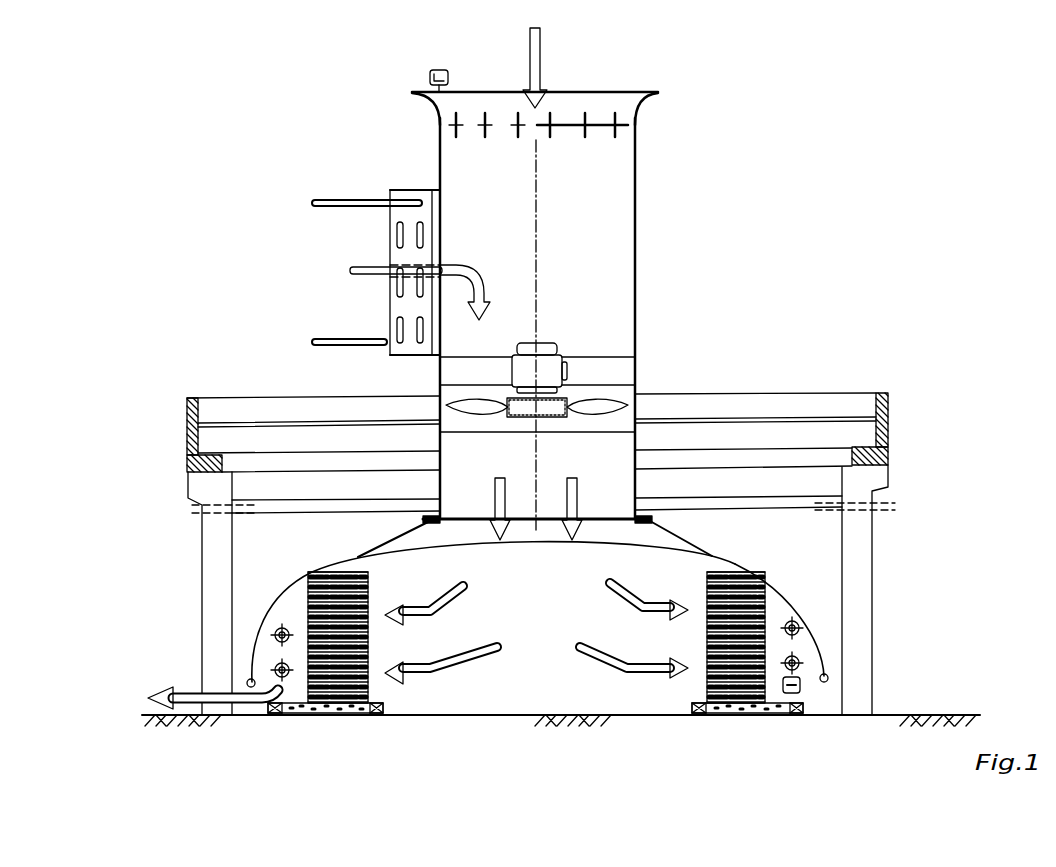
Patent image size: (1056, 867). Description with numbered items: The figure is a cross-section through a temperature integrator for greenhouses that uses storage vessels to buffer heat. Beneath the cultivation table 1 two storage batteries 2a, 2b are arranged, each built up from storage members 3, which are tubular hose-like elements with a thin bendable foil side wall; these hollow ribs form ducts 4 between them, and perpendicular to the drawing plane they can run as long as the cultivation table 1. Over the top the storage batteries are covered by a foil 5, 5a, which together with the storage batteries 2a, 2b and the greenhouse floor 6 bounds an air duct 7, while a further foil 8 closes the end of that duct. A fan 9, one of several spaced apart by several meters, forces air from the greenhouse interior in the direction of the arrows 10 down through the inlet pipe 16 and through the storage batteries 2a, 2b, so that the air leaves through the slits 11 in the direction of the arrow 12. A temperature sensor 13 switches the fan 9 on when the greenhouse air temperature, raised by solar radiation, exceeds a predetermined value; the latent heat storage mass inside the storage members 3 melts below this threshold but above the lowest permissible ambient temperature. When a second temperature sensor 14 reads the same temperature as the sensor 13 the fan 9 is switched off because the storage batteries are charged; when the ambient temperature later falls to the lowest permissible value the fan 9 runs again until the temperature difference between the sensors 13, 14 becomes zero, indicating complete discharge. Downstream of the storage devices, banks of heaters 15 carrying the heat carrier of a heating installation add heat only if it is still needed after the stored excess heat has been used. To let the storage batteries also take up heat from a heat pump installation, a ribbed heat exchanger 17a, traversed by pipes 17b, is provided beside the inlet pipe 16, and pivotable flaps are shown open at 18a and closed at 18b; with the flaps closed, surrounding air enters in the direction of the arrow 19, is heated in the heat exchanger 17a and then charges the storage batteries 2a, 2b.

The cultivation table 1 is at (892, 430).
The storage battery 2a is at (368, 638).
The storage battery 2b is at (707, 635).
The storage member 3 is at (307, 598).
The duct 4 is at (314, 676).
The foil 5 is at (742, 556).
The foil 5a is at (270, 607).
The greenhouse floor 6 is at (526, 758).
The air duct 7 is at (516, 687).
The foil 8 is at (563, 678).
The fan 9 is at (553, 373).
The arrow 10 is at (530, 93).
The slit 11 is at (827, 692).
The arrow 12 is at (176, 698).
The temperature sensor 13 is at (432, 70).
The temperature sensor 14 is at (794, 693).
The bank of heaters 15 is at (803, 628).
The inlet pipe 16 is at (636, 258).
The ribbed heat exchanger 17a is at (400, 257).
The pipe 17b is at (380, 341).
The pivotable flap 18a is at (485, 122).
The pivotable flap 18b is at (588, 122).
The arrow 19 is at (351, 271).